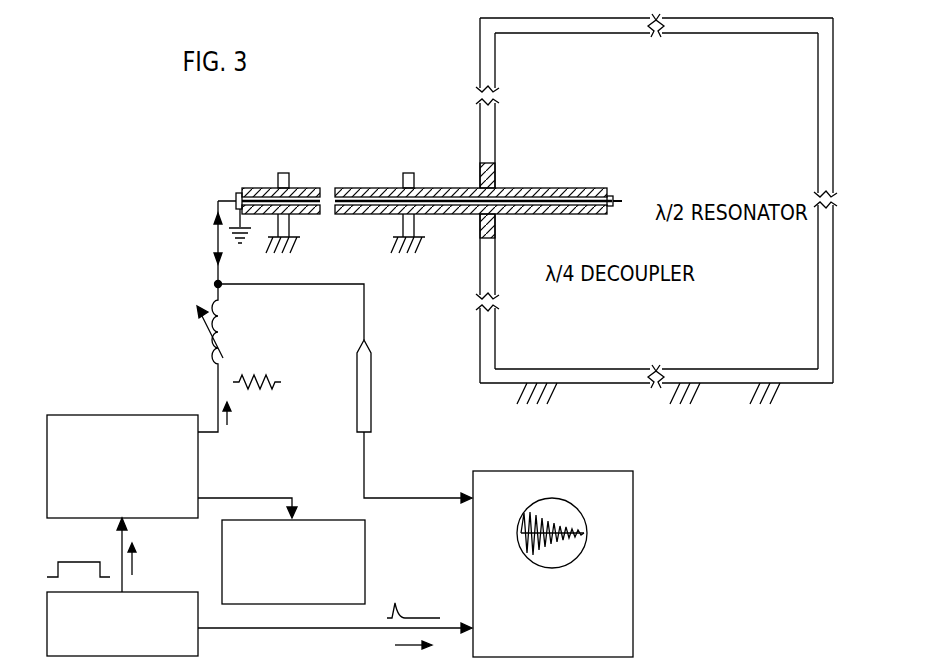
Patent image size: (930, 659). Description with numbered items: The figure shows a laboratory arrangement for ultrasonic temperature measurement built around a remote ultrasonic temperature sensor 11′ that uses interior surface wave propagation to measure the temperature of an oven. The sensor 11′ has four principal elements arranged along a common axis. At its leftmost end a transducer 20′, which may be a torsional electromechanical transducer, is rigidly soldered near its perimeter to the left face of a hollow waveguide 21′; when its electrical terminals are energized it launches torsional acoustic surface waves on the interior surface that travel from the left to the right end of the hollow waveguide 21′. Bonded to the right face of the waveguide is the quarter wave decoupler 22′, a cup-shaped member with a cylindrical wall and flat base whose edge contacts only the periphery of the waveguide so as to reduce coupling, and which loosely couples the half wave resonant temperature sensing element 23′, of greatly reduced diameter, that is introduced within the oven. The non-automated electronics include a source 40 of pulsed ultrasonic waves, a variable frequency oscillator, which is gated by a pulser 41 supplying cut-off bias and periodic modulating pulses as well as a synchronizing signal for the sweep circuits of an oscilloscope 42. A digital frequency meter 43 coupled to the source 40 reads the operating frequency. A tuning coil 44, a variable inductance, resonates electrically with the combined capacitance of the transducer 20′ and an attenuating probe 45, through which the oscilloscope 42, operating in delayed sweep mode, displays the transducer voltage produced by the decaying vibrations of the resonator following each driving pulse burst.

The remote ultrasonic temperature sensor 11′ is at (238, 148).
The transducer 20′ is at (240, 193).
The hollow waveguide 21′ is at (452, 222).
The quarter wave decoupler 22′ is at (616, 216).
The resonant temperature sensing element 23′ is at (625, 192).
The source of pulsed ultrasonic waves 40 is at (72, 412).
The pulser 41 is at (172, 592).
The oscilloscope 42 is at (636, 561).
The digital frequency meter 43 is at (370, 556).
The tuning coil 44 is at (222, 330).
The probe 45 is at (357, 360).